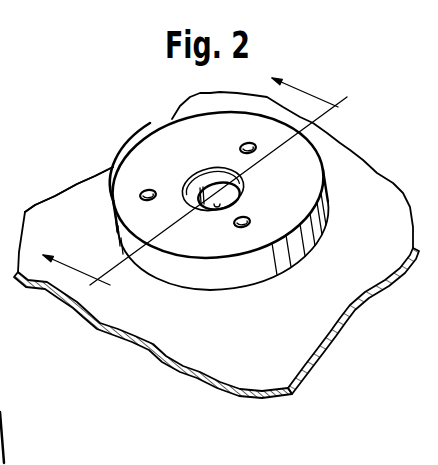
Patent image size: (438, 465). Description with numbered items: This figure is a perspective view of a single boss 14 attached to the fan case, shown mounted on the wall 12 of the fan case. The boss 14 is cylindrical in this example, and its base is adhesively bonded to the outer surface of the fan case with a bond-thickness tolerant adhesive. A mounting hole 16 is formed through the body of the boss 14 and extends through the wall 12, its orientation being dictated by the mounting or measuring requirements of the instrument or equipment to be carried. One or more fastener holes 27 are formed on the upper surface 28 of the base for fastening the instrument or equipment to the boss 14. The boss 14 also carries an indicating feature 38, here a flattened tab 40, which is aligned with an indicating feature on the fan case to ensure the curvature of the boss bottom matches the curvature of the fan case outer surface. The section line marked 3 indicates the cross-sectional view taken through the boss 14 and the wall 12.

The wall 12 is at (360, 190).
The boss 14 is at (300, 243).
The mounting hole 16 is at (214, 208).
The fastener hole 27 is at (147, 189).
The upper surface 28 is at (282, 203).
The indicating feature 38 is at (140, 192).
The flattened tab 40 is at (140, 193).
The section line III-III 3 is at (204, 194).